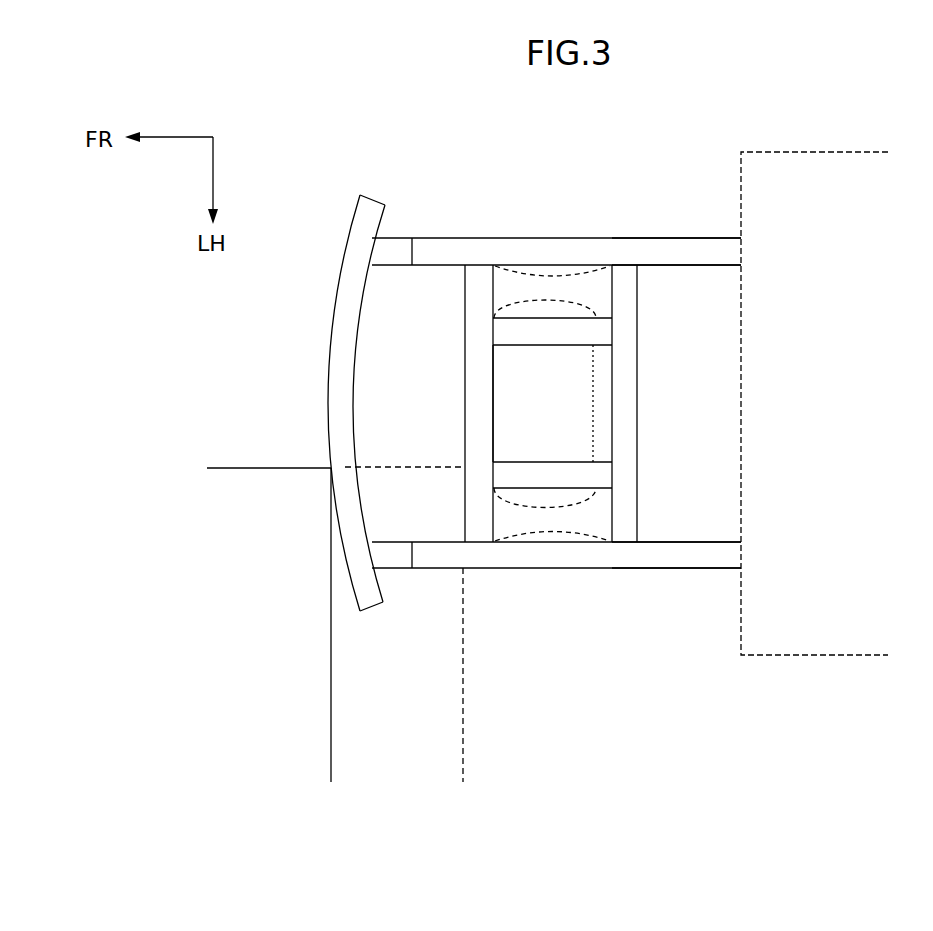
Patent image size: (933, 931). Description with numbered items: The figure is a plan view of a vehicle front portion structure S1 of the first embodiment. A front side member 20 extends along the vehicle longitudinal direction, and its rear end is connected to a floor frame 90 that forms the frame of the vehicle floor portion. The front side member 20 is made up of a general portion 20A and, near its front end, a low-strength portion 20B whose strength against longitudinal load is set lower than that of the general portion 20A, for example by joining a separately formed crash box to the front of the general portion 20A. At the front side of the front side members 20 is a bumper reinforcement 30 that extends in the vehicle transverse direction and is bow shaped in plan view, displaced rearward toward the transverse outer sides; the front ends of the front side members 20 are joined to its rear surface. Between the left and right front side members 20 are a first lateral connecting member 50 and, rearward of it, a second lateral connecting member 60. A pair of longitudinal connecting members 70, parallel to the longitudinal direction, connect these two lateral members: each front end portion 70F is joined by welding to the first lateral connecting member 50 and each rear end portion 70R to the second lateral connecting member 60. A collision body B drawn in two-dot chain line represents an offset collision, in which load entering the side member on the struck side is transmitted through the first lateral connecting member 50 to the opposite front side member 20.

The vehicle front portion structure S1 is at (662, 160).
The front side member 20 is at (537, 234).
The general portion 20A is at (600, 249).
The low-strength portion 20B is at (397, 247).
The bumper reinforcement 30 is at (322, 407).
The first lateral connecting member 50 is at (464, 402).
The second lateral connecting member 60 is at (638, 402).
The longitudinal connecting member 70 is at (551, 314).
The front end portion 70F is at (495, 348).
The rear end portion 70R is at (610, 348).
The floor frame 90 is at (831, 409).
The collision body B is at (259, 615).